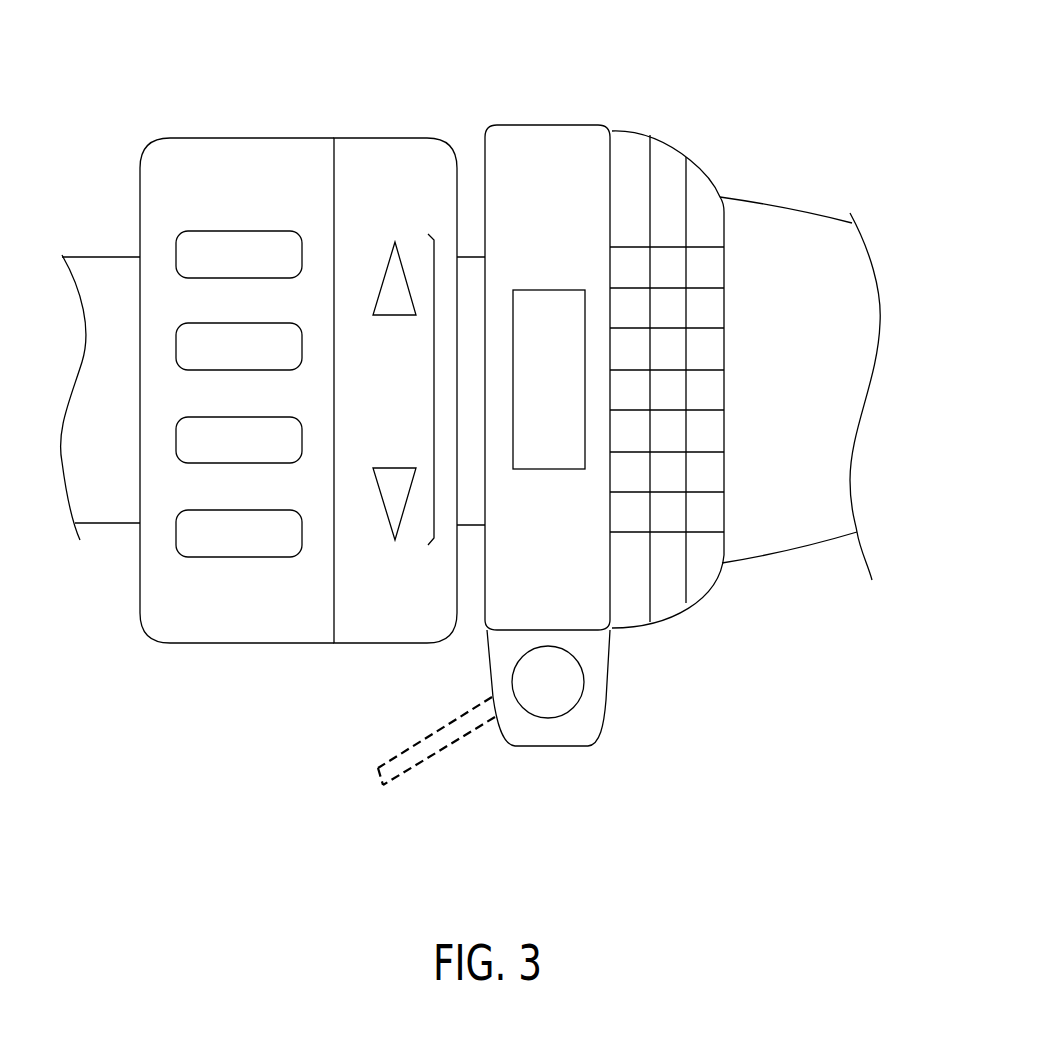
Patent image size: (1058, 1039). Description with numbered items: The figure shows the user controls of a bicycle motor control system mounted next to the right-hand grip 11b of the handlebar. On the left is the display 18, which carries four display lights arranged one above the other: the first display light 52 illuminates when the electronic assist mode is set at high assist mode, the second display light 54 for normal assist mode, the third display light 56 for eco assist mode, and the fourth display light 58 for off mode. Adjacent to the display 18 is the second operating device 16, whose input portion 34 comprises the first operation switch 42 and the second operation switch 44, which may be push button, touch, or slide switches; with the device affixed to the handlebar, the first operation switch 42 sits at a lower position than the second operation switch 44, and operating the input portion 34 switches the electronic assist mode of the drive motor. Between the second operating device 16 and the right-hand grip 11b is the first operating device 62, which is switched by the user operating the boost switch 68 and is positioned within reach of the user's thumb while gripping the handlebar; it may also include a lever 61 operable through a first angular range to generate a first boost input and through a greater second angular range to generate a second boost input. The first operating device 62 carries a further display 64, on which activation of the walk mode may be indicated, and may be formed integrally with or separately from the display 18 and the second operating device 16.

The display 18 is at (231, 138).
The second operating device 16 is at (396, 138).
The first display light 52 is at (258, 231).
The second display light 54 is at (258, 323).
The third display light 56 is at (258, 417).
The fourth display light 58 is at (258, 510).
The second operation switch 44 is at (401, 266).
The first operation switch 42 is at (402, 524).
The input portion 34 is at (434, 392).
The first operating device 62 is at (717, 793).
The display 64 is at (566, 288).
The boost switch 68 is at (583, 688).
The lever 61 is at (438, 731).
The right-hand grip 11b is at (797, 552).